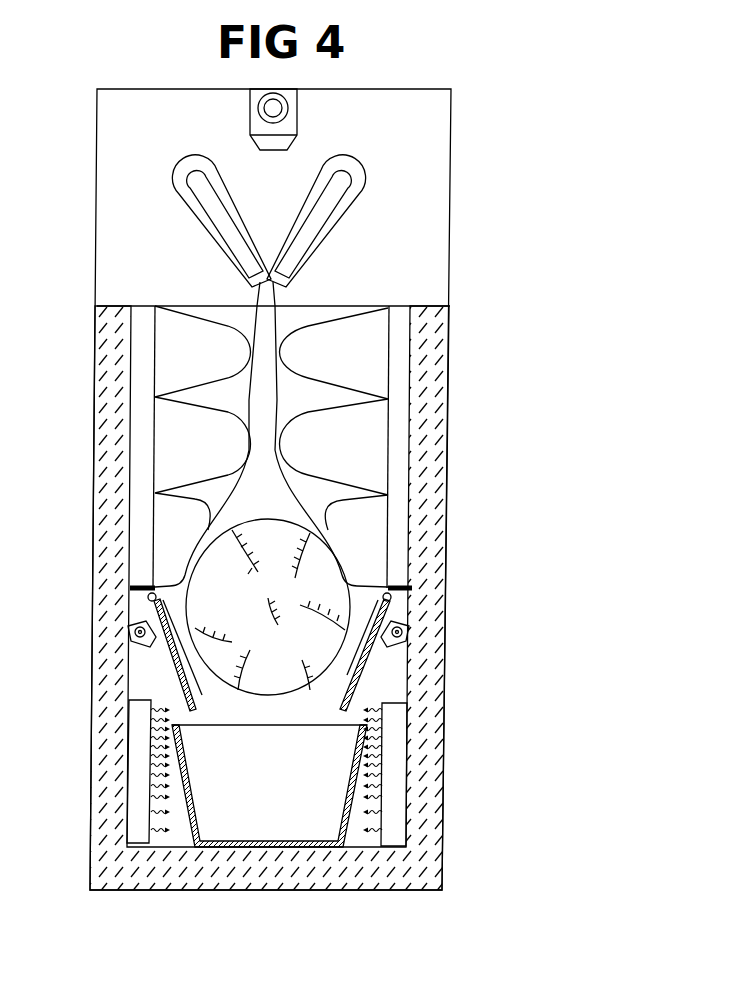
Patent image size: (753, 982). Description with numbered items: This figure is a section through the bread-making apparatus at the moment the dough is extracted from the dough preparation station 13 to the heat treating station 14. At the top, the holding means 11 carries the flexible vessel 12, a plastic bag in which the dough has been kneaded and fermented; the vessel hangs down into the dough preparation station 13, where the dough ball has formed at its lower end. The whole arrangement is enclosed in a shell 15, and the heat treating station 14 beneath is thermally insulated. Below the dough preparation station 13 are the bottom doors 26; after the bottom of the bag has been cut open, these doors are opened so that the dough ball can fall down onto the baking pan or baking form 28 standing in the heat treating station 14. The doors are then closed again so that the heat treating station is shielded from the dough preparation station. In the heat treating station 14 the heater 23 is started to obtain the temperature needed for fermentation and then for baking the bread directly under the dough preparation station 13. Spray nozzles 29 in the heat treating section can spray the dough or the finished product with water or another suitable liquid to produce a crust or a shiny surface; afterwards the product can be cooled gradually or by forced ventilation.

The holding means 11 is at (380, 179).
The flexible vessel 12 is at (275, 325).
The dough preparation station 13 is at (395, 440).
The heat treating station 14 is at (392, 680).
The shell 15 is at (427, 769).
The heater 23 is at (135, 733).
The bottom doors 26 is at (182, 667).
The baking pan or baking form 28 is at (350, 802).
The spray nozzles 29 is at (133, 628).